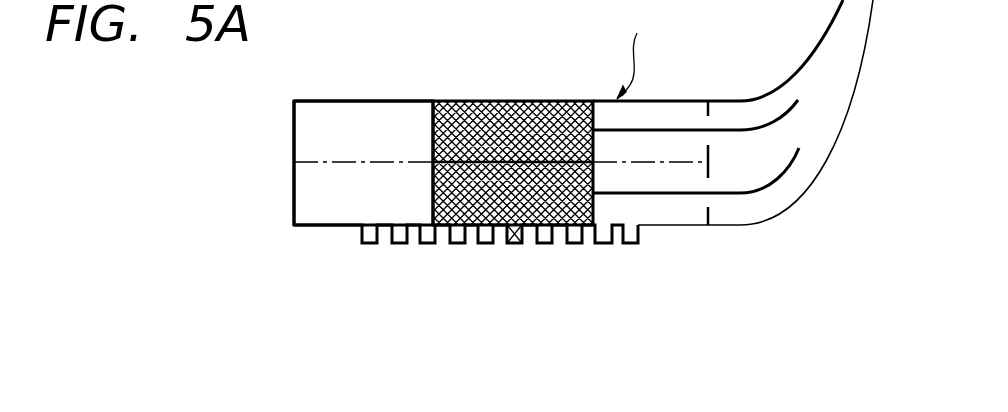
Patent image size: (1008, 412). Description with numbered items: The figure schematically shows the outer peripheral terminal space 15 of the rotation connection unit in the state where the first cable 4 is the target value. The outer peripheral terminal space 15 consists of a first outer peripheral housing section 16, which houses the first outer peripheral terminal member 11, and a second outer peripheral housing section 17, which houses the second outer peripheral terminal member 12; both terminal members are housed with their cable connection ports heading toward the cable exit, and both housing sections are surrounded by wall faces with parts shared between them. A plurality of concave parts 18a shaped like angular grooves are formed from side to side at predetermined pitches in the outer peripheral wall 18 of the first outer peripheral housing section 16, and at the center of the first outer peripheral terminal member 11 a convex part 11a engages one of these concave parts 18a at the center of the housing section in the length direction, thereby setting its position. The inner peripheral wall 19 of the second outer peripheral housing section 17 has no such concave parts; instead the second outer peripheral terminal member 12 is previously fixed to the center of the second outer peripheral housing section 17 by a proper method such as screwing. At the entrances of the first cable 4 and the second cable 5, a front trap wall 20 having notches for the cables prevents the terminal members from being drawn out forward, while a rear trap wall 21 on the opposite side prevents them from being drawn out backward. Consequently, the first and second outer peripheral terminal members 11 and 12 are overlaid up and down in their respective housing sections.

The first cable 4 is at (790, 163).
The second cable 5 is at (739, 129).
The first outer peripheral terminal member 11 is at (473, 233).
The convex part 11a is at (516, 247).
The second outer peripheral terminal member 12 is at (494, 108).
The outer peripheral terminal space 15 is at (639, 51).
The first outer peripheral housing section 16 is at (343, 212).
The second outer peripheral housing section 17 is at (657, 122).
The outer peripheral wall 18 is at (653, 232).
The concave parts 18a is at (433, 243).
The inner peripheral wall 19 is at (362, 101).
The front trap wall 20 is at (710, 172).
The rear trap wall 21 is at (294, 137).